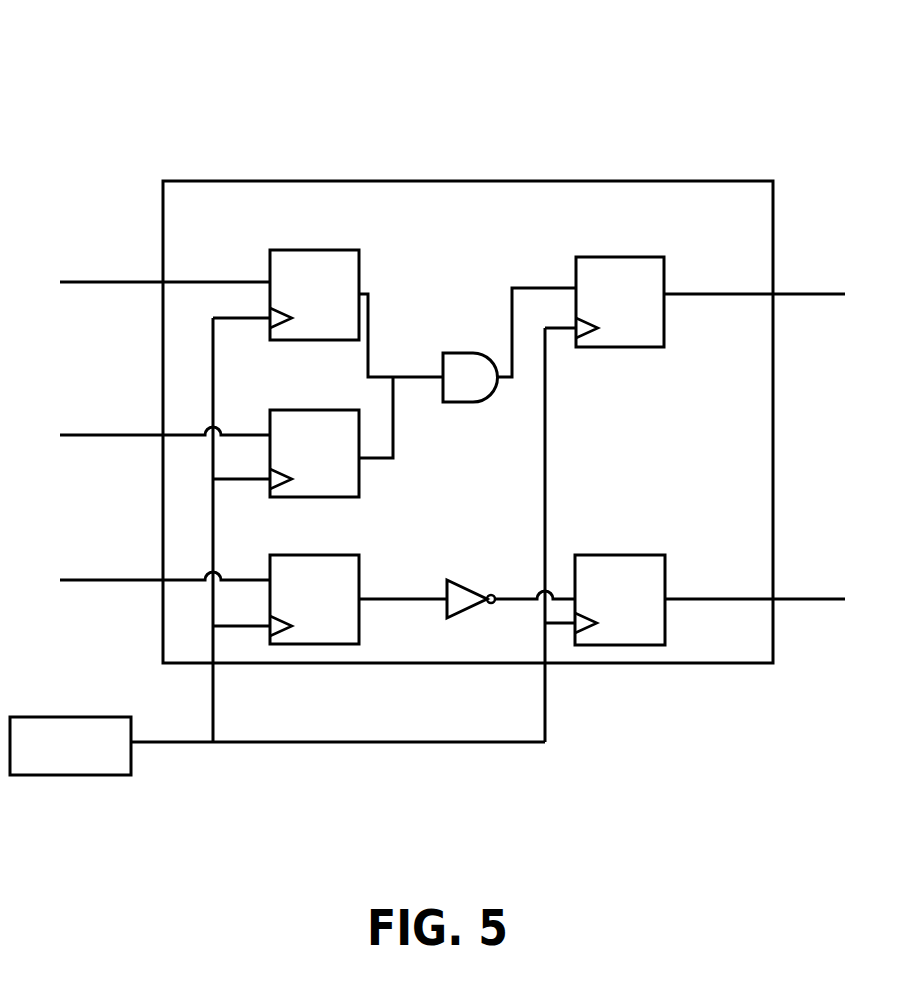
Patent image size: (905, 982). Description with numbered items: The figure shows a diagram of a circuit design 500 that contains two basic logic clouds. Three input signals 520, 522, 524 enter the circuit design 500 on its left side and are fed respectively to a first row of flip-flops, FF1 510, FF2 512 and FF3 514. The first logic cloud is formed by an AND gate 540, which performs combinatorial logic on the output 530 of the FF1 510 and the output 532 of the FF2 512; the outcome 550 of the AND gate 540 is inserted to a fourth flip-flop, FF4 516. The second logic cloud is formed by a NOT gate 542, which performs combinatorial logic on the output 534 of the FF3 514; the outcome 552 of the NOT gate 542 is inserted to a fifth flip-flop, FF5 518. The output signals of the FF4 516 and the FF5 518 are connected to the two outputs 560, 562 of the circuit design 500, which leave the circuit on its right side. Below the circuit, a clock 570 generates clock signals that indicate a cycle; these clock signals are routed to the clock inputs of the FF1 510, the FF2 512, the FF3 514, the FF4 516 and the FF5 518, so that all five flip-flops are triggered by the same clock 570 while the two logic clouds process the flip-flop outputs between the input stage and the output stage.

The circuit design 500 is at (207, 157).
The FF1 510 is at (344, 233).
The FF2 512 is at (307, 410).
The FF3 514 is at (288, 555).
The FF4 516 is at (603, 257).
The FF5 518 is at (638, 539).
The input signal 520 is at (120, 268).
The input signal 522 is at (120, 420).
The input signal 524 is at (87, 580).
The output of FF1 530 is at (370, 325).
The output of FF2 532 is at (422, 435).
The output of FF3 534 is at (416, 588).
The AND gate 540 is at (480, 337).
The NOT gate 542 is at (486, 570).
The outcome of the AND gate 550 is at (514, 288).
The outcome of the NOT gate 552 is at (548, 586).
The output signal 560 is at (782, 294).
The output signal 562 is at (780, 599).
The clock 570 is at (78, 717).